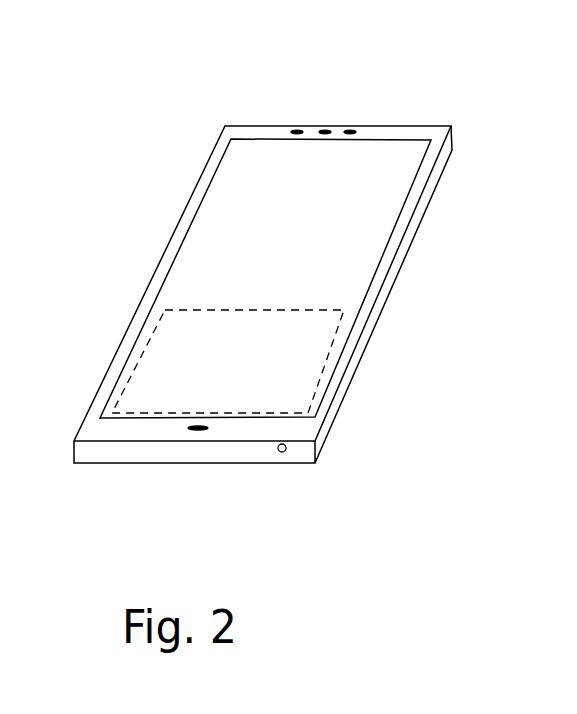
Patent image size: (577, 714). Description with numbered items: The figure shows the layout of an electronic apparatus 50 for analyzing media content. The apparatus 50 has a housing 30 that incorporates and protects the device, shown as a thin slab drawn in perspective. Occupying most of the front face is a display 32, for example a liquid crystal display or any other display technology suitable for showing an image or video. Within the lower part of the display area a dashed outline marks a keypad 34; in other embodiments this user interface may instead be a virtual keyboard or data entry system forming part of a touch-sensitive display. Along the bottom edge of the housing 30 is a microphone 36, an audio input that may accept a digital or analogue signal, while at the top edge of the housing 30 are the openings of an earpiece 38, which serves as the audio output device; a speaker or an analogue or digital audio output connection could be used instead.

The apparatus 50 is at (460, 93).
The housing 30 is at (250, 125).
The display 32 is at (347, 230).
The keypad 34 is at (303, 370).
The microphone 36 is at (208, 433).
The earpiece 38 is at (332, 128).